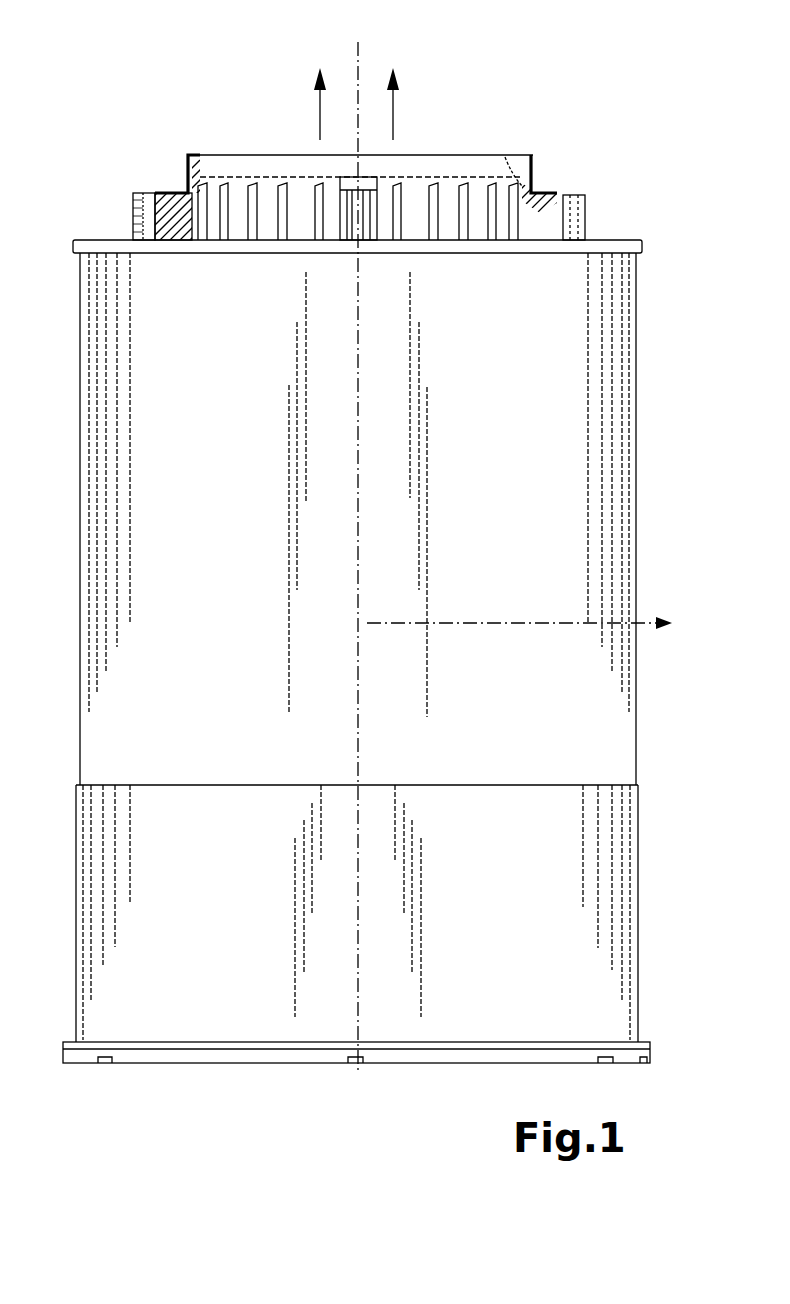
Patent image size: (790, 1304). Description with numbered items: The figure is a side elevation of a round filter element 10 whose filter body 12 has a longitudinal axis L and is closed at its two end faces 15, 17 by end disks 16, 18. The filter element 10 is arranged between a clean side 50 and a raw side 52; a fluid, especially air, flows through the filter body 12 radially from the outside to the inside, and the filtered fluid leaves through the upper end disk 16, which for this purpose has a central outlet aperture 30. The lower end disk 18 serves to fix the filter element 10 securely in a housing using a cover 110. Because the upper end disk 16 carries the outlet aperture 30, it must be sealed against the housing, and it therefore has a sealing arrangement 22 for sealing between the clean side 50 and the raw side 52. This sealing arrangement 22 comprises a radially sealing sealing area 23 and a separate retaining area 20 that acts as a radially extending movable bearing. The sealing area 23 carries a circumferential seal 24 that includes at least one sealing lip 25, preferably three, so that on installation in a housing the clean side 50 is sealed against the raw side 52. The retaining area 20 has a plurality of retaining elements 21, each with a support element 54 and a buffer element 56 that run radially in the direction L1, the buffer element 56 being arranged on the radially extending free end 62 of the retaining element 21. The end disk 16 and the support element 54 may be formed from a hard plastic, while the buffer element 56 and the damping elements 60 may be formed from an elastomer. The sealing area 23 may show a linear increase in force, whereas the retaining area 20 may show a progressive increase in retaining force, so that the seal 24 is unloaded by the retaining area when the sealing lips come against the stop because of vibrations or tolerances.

The filter element 10 is at (370, 582).
The filter body 12 is at (595, 399).
The end face 15 is at (604, 217).
The end disk 16 is at (628, 246).
The end face 17 is at (356, 1096).
The end disk 18 is at (197, 1046).
The retaining area 20 is at (313, 171).
The retaining element 21 is at (122, 229).
The sealing arrangement 22 is at (166, 171).
The sealing area 23 is at (190, 143).
The circumferential seal 24 is at (197, 168).
The sealing lip 25 is at (209, 166).
The outlet aperture 30 is at (370, 156).
The clean side 50 is at (516, 521).
The raw side 52 is at (698, 521).
The support element 54 is at (175, 222).
The buffer element 56 is at (133, 203).
The damping element 60 is at (180, 208).
The free end 62 is at (98, 174).
The cover 110 is at (289, 1058).
The longitudinal axis L is at (358, 65).
The radial direction L1 is at (514, 622).